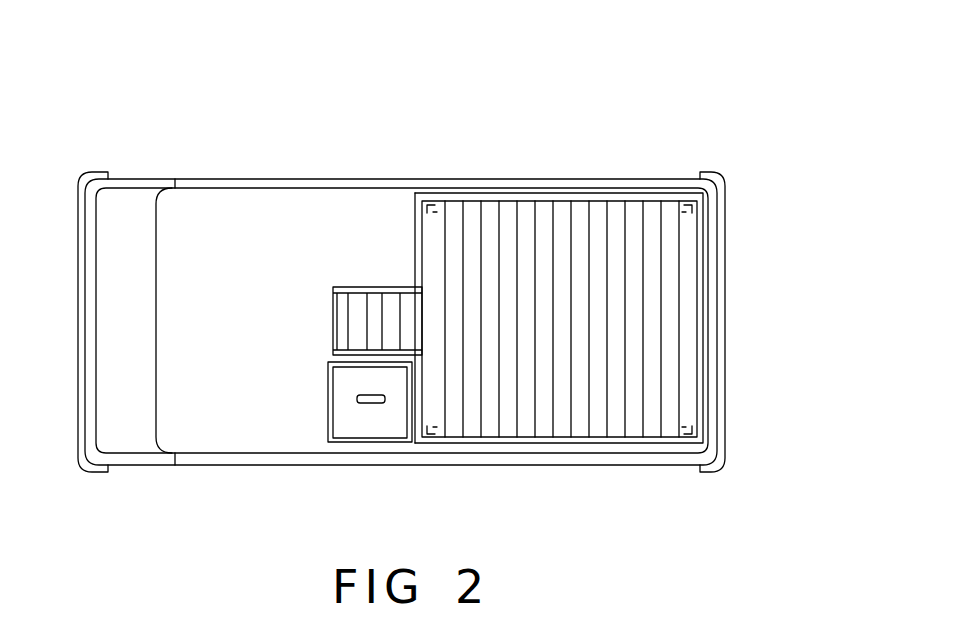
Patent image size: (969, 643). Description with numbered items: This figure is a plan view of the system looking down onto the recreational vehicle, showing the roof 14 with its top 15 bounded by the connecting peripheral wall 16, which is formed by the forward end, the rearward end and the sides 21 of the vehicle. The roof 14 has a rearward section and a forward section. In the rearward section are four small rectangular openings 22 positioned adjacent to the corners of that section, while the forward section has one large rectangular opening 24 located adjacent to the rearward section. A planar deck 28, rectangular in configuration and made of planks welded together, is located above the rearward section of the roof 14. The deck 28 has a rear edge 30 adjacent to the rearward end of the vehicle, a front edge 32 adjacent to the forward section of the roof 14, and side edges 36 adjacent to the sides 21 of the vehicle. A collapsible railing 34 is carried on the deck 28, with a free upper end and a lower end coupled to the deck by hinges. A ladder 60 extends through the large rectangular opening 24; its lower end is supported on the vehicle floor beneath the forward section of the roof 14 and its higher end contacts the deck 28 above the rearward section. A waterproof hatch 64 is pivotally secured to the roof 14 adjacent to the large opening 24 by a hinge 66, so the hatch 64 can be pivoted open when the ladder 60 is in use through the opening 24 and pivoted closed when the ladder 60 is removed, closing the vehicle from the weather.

The roof 14 is at (257, 322).
The top 15 is at (212, 241).
The connecting peripheral wall 16 is at (388, 187).
The sides 21 is at (515, 192).
The small rectangular openings 22 is at (697, 210).
The large rectangular opening 24 is at (330, 330).
The planar deck 28 is at (652, 403).
The rear edge 30 is at (708, 297).
The front edge 32 is at (406, 220).
The collapsible railing 34 is at (565, 193).
The side edges 36 is at (630, 201).
The ladder 60 is at (360, 313).
The waterproof hatch 64 is at (382, 432).
The hinge 66 is at (353, 363).